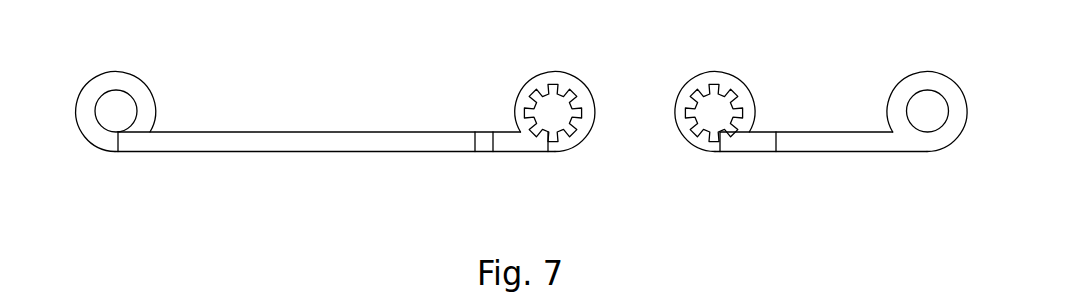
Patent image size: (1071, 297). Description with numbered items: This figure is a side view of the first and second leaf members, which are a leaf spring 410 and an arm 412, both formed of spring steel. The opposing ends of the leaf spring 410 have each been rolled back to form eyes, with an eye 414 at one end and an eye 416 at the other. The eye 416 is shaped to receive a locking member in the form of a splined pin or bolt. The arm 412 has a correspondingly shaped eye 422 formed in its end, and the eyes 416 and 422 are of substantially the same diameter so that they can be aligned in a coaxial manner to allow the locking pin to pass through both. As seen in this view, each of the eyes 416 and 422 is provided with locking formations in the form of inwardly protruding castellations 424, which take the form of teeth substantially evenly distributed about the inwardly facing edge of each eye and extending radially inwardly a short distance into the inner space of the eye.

The leaf spring 410 is at (363, 142).
The arm 412 is at (837, 142).
The eye 414 is at (132, 86).
The eye 416 is at (572, 142).
The eye 422 is at (713, 143).
The castellations 424 is at (573, 91).